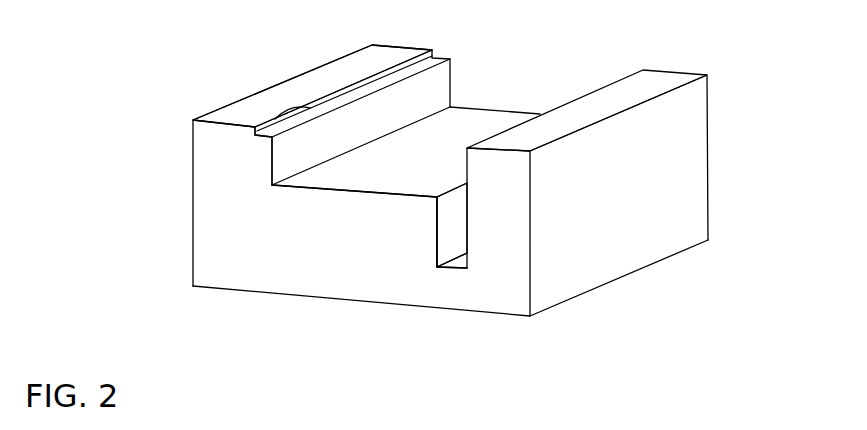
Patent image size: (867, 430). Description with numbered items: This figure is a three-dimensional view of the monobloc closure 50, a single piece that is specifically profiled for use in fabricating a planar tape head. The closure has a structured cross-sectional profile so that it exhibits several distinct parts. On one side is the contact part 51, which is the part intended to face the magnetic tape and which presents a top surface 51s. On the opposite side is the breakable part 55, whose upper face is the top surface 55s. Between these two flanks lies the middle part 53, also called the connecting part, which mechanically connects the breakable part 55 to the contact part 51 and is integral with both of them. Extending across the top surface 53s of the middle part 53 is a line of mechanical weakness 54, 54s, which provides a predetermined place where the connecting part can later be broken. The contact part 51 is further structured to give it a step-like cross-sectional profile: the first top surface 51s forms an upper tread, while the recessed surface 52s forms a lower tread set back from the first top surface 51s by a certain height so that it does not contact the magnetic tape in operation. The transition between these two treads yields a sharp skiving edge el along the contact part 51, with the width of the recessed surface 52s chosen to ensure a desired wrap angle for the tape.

The monobloc closure 50 is at (627, 322).
The contact part 51 is at (206, 227).
The top surface of the contact part 51s is at (291, 92).
The recessed surface 52s is at (448, 59).
The skiving edge el is at (318, 108).
The middle part 53 is at (331, 221).
The top surface of the connecting part 53s is at (437, 172).
The line of mechanical weakness 54 is at (451, 297).
The line of mechanical weakness 54s is at (438, 268).
The breakable part 55 is at (630, 245).
The top surface of the breakable part 55s is at (666, 86).